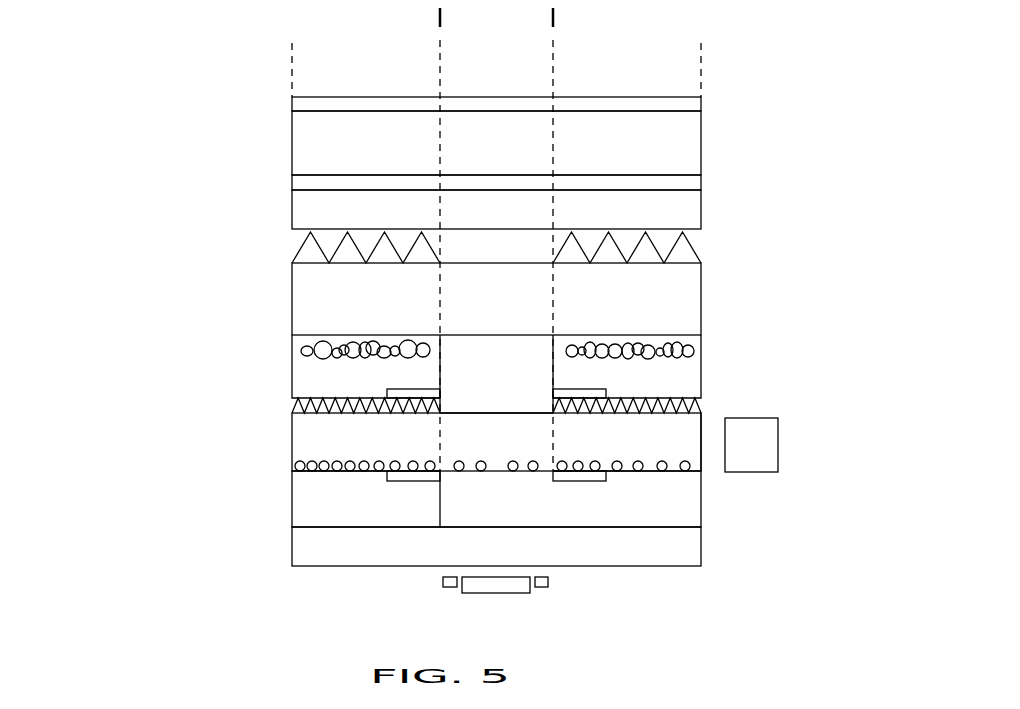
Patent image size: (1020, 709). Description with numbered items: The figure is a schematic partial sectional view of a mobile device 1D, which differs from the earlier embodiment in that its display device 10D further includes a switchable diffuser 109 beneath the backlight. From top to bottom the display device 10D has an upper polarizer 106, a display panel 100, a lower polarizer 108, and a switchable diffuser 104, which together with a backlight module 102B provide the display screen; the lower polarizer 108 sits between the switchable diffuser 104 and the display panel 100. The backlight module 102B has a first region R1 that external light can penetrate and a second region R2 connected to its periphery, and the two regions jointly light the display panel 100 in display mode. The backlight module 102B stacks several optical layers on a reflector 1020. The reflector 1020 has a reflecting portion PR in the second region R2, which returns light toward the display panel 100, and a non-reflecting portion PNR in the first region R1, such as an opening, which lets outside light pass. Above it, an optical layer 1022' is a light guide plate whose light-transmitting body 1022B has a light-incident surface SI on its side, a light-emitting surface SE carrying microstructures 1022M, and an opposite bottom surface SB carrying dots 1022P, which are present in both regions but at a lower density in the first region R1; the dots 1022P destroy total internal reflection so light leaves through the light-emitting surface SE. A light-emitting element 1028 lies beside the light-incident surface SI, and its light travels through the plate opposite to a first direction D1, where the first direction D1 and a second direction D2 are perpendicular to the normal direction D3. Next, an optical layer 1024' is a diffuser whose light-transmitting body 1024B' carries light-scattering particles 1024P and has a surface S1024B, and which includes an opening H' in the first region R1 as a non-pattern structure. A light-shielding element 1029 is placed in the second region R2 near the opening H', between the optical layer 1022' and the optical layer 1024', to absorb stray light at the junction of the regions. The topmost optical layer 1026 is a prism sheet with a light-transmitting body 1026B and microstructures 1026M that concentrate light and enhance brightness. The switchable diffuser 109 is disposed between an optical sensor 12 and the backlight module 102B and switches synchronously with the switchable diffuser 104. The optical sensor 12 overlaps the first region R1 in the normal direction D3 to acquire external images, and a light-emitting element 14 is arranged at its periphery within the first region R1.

The display device 10D is at (60, 88).
The upper polarizer 106 is at (303, 104).
The display panel 100 is at (303, 145).
The lower polarizer 108 is at (303, 182).
The switchable diffuser 104 is at (303, 202).
The backlight module 102B is at (127, 248).
The optical layer 1026 is at (193, 232).
The microstructures 1026M is at (300, 255).
The light-transmitting body 1026B is at (303, 292).
The optical layer 1024' is at (414, 357).
The light-scattering particles 1024P is at (312, 351).
The light-transmitting body 1024B' is at (448, 374).
The optical layer 1022' is at (414, 422).
The microstructures 1022M is at (295, 407).
The light-transmitting body 1022B is at (298, 437).
The dots 1022P is at (298, 466).
The reflector 1020 is at (193, 478).
The reflecting portion PR is at (303, 495).
The non-reflecting portion PNR is at (463, 520).
The switchable diffuser 109 is at (303, 549).
The light-shielding element 1029 is at (440, 393).
The light-emitting element 1028 is at (770, 440).
The surface S1024B is at (643, 333).
The opening H' is at (648, 356).
The light-incident surface SI is at (703, 440).
The light-emitting surface SE is at (680, 417).
The bottom surface SB is at (680, 473).
The mobile device 1D is at (818, 592).
The optical sensor 12 is at (497, 593).
The light-emitting element 14 is at (547, 612).
The first region R1 is at (496, 50).
The second region R2 is at (701, 69).
The first direction D1 is at (776, 110).
The second direction D2 is at (762, 104).
The normal direction D3 is at (768, 102).